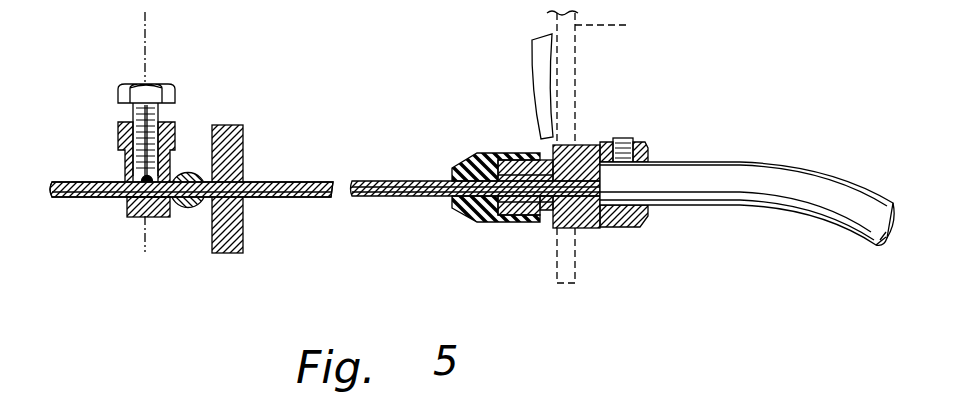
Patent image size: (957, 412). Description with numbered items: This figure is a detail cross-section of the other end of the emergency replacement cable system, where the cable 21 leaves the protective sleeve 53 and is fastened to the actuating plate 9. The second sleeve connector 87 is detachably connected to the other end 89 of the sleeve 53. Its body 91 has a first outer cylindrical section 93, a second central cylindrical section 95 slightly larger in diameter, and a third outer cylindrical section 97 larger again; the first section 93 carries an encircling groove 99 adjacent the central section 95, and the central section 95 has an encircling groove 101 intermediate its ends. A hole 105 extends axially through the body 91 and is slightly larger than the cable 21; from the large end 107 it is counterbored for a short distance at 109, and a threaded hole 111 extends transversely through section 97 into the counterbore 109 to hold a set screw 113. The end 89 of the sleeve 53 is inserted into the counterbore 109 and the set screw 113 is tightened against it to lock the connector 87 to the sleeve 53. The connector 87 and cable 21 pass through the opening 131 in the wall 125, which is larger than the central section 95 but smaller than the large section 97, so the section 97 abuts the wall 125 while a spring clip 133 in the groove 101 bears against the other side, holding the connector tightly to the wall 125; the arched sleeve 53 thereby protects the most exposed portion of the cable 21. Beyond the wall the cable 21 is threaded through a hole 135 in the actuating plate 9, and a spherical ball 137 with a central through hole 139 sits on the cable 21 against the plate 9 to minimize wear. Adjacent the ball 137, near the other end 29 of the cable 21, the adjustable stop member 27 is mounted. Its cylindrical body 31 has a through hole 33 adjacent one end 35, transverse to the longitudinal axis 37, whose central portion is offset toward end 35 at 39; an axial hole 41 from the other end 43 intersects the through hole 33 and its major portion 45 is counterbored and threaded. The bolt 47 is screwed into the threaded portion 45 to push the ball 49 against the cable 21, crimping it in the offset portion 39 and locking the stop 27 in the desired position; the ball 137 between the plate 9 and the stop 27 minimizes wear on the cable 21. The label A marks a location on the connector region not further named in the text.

The actuating plate 9 is at (232, 253).
The cable 21 is at (418, 210).
The adjustable stop member 27 is at (149, 237).
The other end of cable 29 is at (52, 187).
The cylindrical body 31 is at (125, 156).
The through hole 33 is at (140, 218).
The one end of body 35 is at (150, 218).
The longitudinal axis 37 is at (145, 36).
The offset portion 39 is at (165, 220).
The axial hole 41 is at (175, 172).
The other end of body 43 is at (175, 121).
The threaded portion 45 is at (133, 115).
The bolt 47 is at (168, 84).
The ball 49 is at (127, 200).
The sleeve 53 is at (805, 228).
The second sleeve connector 87 is at (612, 137).
The other end of sleeve 89 is at (585, 229).
The body of second sleeve connector 91 is at (650, 150).
The first outer cylindrical section 93 is at (505, 219).
The second central cylindrical section 95 is at (556, 228).
The third outer cylindrical section 97 is at (615, 229).
The encircling groove 99 is at (522, 153).
The encircling groove 101 is at (540, 223).
The hole 105 is at (574, 143).
The large end of body 107 is at (652, 224).
The counterbore 109 is at (652, 228).
The threaded hole 111 is at (716, 161).
The set screw 113 is at (662, 141).
The wall 125 is at (608, 147).
The opening 131 is at (570, 150).
The spring clip 133 is at (533, 38).
The hole 135 is at (243, 216).
The spherical ball 137 is at (191, 210).
The central through hole 139 is at (243, 141).
The point A is at (470, 170).